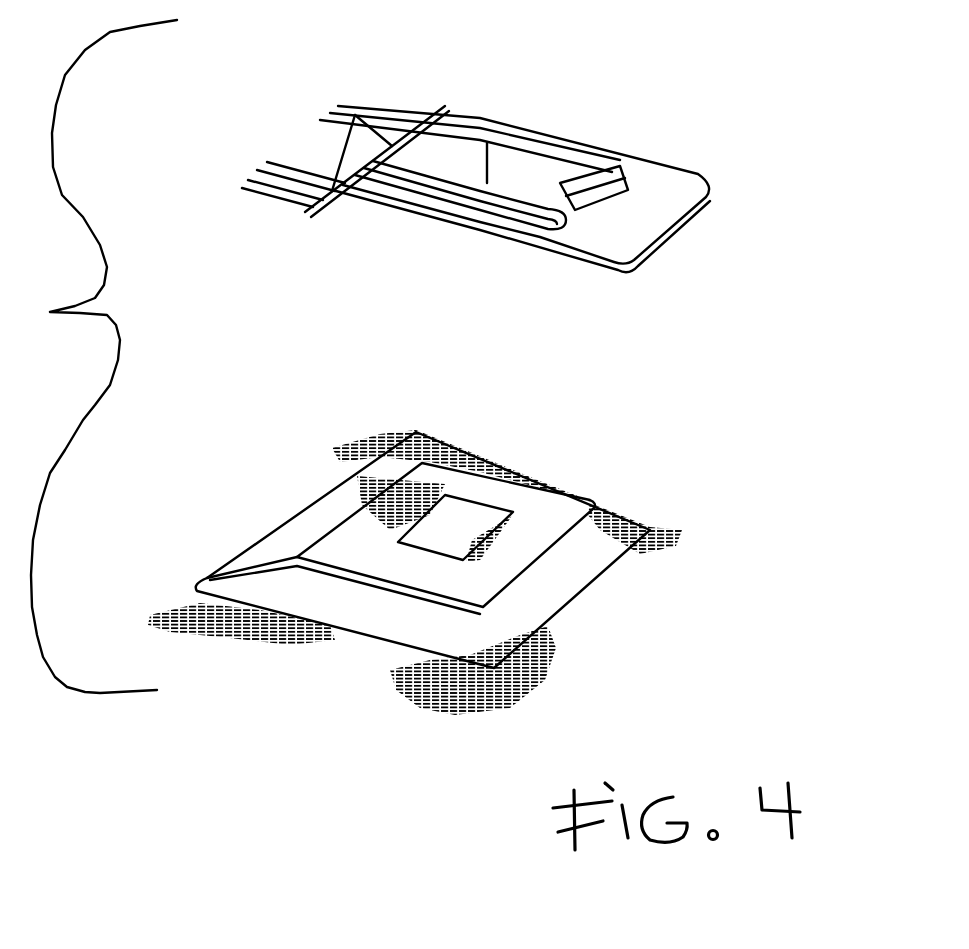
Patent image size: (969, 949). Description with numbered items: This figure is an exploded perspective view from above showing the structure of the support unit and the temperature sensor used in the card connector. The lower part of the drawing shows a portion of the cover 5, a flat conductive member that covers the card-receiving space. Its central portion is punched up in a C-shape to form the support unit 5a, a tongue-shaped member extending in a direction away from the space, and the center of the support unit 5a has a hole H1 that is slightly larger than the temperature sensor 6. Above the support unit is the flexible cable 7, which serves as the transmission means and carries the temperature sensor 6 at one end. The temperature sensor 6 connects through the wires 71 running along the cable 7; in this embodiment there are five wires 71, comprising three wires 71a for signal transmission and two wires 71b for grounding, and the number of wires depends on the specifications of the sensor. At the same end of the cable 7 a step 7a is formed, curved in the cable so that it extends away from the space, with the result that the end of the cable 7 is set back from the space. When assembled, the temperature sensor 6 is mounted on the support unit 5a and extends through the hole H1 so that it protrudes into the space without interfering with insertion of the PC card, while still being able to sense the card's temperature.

The cover 5 is at (690, 522).
The support unit 5a is at (563, 500).
The hole H1 is at (466, 512).
The temperature sensor 6 is at (620, 162).
The flexible cable 7 is at (494, 136).
The step 7a is at (355, 115).
The wires 71 is at (470, 114).
The signal transmission wires 71a is at (460, 142).
The grounding wires 71b is at (560, 150).